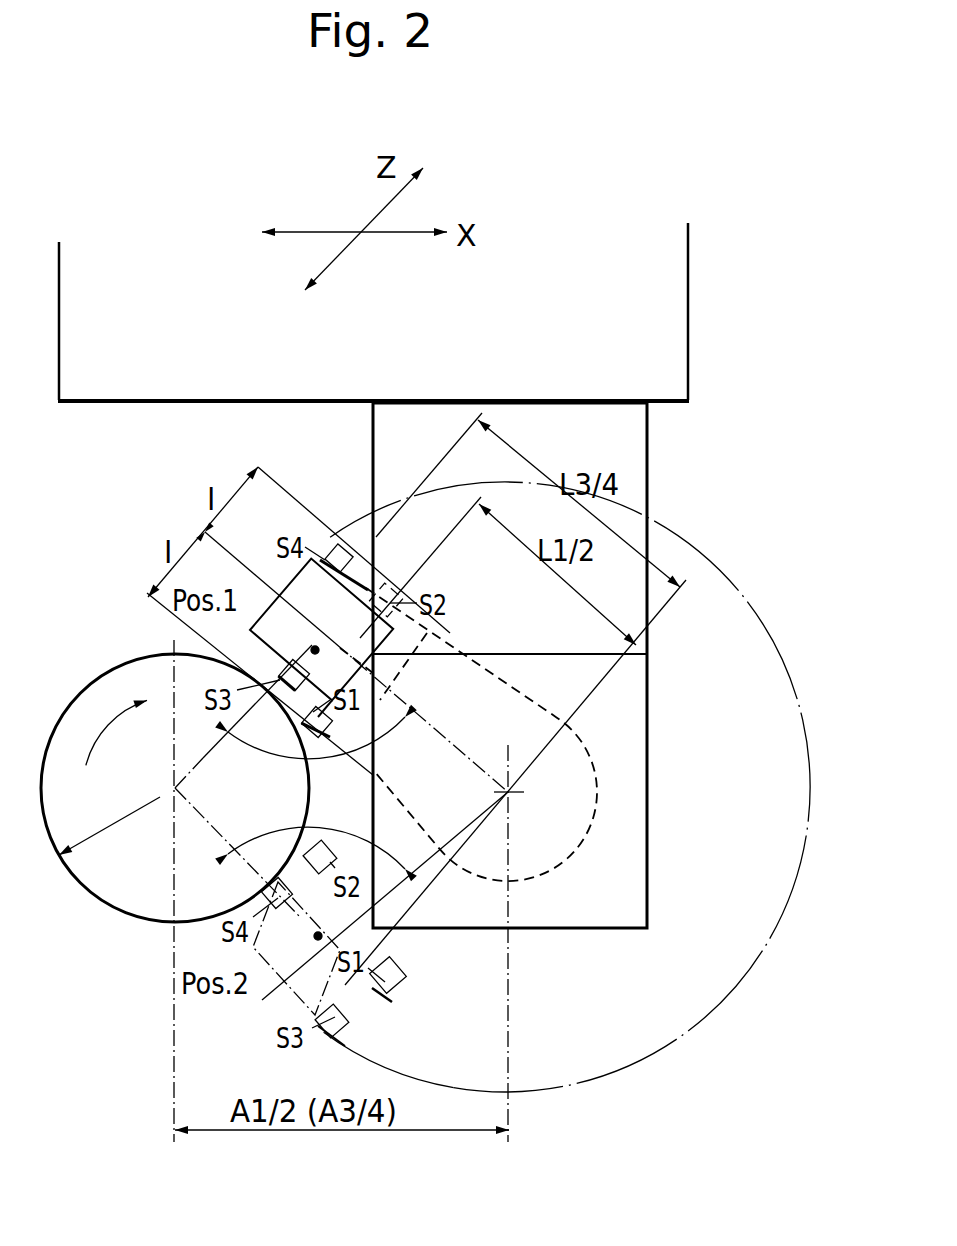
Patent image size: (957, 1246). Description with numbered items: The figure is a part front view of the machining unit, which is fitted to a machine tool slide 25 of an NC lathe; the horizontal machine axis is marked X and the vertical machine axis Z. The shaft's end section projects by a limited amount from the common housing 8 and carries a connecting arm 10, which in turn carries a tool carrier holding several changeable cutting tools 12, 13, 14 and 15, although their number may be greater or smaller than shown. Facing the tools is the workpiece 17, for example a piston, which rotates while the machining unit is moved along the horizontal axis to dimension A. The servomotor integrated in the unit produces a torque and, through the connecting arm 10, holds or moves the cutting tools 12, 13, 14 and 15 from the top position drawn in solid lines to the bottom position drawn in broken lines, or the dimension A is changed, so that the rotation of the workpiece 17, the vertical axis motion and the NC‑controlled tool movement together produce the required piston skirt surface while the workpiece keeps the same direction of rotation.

The common housing 8 is at (630, 717).
The connecting arm 10 is at (578, 820).
The cutting tool 12 is at (295, 910).
The cutting tool 13 is at (380, 868).
The cutting tool 14 is at (365, 1022).
The cutting tool 15 is at (397, 993).
The workpiece 17 is at (135, 672).
The machine tool slide 25 is at (185, 361).